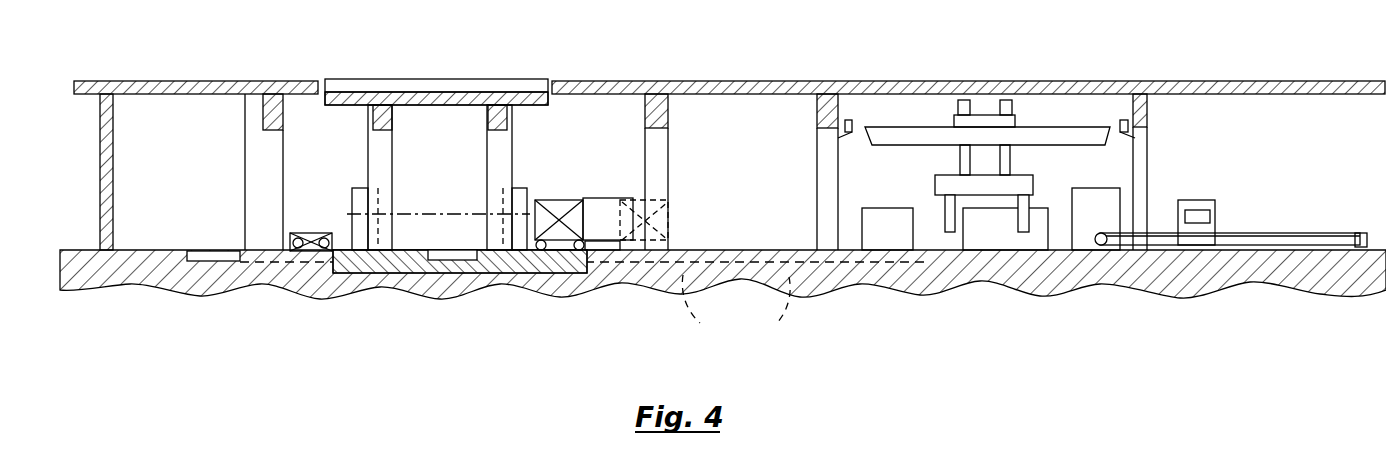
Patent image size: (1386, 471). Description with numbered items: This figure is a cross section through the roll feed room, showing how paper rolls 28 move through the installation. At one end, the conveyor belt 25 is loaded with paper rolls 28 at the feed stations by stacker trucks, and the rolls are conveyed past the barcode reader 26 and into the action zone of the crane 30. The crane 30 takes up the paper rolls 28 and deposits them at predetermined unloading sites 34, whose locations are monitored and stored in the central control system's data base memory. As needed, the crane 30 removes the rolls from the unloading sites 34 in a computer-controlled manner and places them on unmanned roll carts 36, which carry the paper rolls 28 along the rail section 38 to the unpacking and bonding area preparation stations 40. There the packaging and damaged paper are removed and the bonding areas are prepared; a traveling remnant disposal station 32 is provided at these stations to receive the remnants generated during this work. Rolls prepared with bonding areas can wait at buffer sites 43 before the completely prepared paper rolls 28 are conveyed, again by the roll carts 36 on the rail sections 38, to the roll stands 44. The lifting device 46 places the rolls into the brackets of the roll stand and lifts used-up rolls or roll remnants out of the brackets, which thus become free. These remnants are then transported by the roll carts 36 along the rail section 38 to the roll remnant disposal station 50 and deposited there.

The conveyor belt 25 is at (1253, 250).
The barcode reader 26 is at (1190, 228).
The paper rolls 28 is at (1097, 222).
The crane 30 is at (880, 137).
The traveling remnant disposal station 32 is at (736, 311).
The unloading sites 34 is at (870, 237).
The roll carts 36 is at (657, 267).
The rail sections 38 is at (723, 299).
The unpacking and bonding area preparation stations 40 is at (610, 253).
The buffer sites 43 is at (587, 253).
The roll stands 44 is at (418, 218).
The lifting device 46 is at (460, 262).
The roll remnant disposal station 50 is at (291, 253).